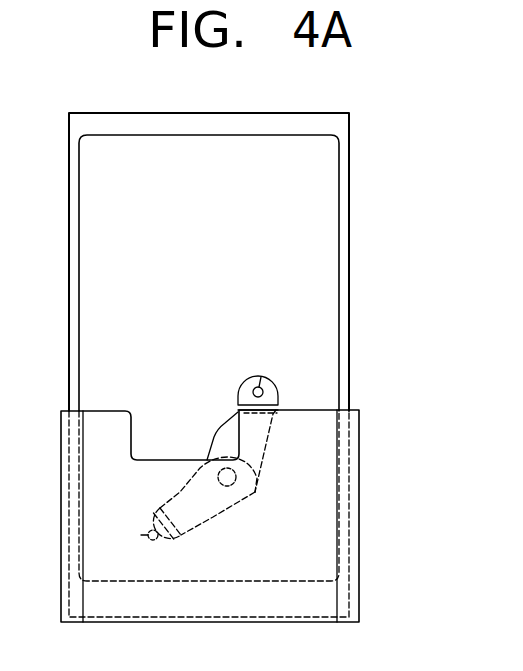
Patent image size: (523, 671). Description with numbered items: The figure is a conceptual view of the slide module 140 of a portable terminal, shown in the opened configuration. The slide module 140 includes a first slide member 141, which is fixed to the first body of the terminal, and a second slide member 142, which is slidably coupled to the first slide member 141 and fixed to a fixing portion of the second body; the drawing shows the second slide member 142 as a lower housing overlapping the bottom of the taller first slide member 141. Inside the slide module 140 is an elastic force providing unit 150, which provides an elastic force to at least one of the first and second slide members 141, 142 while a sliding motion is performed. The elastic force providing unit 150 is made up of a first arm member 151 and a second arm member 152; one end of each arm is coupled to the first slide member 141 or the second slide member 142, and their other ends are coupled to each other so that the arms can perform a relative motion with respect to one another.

The slide module 140 is at (385, 193).
The first slide member 141 is at (310, 273).
The second slide member 142 is at (302, 555).
The elastic force providing unit 150 is at (202, 437).
The first arm member 151 is at (265, 443).
The second arm member 152 is at (215, 516).